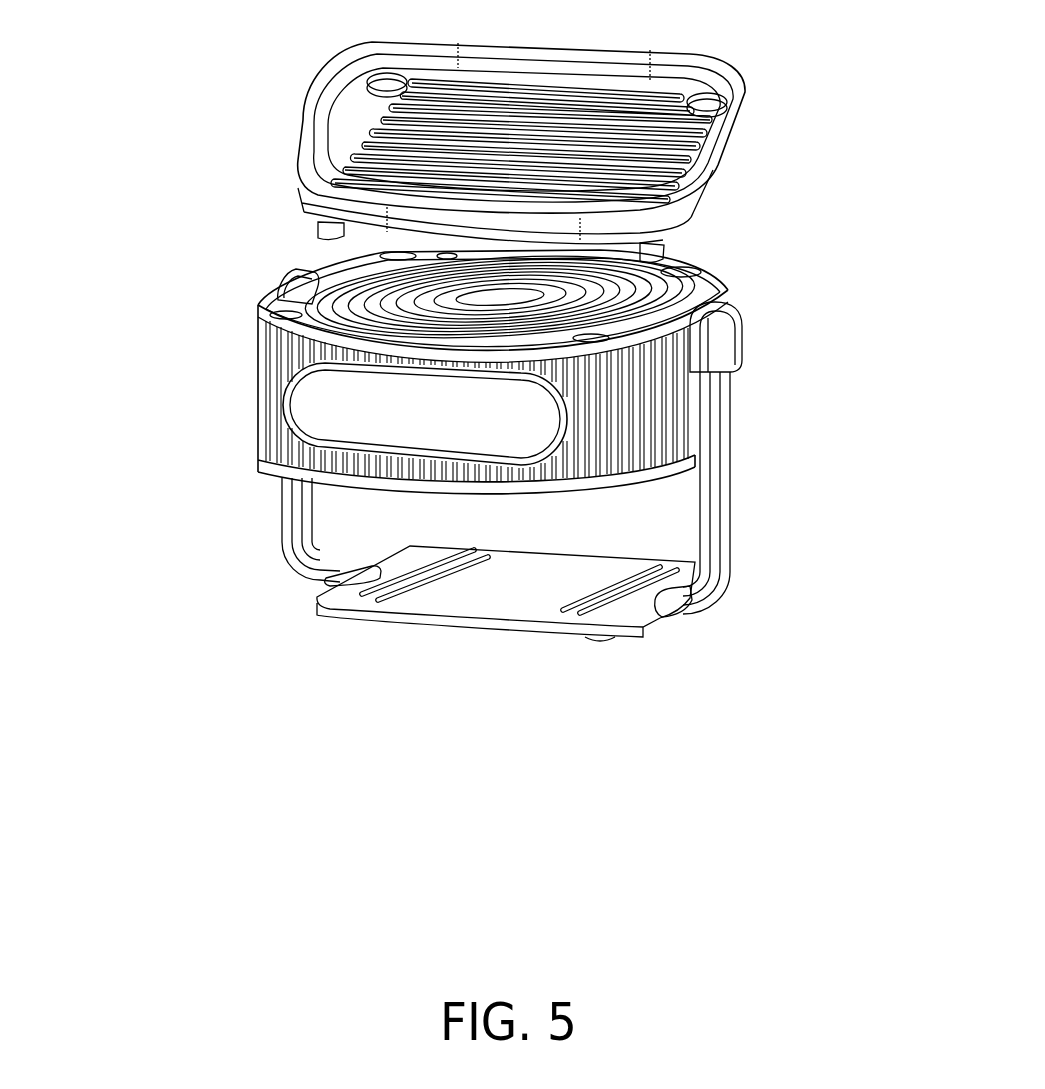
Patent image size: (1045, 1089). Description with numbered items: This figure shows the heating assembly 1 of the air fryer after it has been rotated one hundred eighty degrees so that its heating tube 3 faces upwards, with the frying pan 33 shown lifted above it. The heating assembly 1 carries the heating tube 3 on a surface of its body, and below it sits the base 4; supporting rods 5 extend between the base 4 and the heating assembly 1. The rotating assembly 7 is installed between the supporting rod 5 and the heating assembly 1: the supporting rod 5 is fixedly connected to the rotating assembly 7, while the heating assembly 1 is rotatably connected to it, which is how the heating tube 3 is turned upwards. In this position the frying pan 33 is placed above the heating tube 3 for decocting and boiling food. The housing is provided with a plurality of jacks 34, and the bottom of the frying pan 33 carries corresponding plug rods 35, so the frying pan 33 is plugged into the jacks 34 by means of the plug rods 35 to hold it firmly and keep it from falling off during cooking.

The heating assembly 1 is at (255, 435).
The heating tube 3 is at (690, 262).
The base 4 is at (300, 580).
The supporting rod 5 is at (730, 532).
The rotating assembly 7 is at (742, 327).
The frying pan 33 is at (705, 157).
The jack 34 is at (270, 310).
The plug rod 35 is at (330, 232).